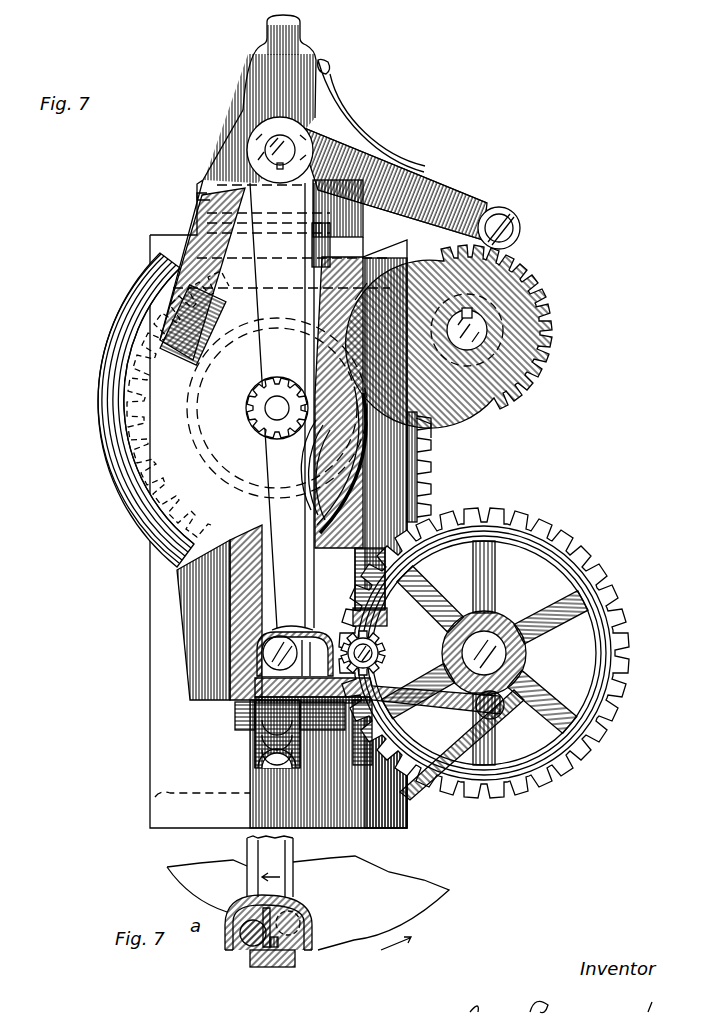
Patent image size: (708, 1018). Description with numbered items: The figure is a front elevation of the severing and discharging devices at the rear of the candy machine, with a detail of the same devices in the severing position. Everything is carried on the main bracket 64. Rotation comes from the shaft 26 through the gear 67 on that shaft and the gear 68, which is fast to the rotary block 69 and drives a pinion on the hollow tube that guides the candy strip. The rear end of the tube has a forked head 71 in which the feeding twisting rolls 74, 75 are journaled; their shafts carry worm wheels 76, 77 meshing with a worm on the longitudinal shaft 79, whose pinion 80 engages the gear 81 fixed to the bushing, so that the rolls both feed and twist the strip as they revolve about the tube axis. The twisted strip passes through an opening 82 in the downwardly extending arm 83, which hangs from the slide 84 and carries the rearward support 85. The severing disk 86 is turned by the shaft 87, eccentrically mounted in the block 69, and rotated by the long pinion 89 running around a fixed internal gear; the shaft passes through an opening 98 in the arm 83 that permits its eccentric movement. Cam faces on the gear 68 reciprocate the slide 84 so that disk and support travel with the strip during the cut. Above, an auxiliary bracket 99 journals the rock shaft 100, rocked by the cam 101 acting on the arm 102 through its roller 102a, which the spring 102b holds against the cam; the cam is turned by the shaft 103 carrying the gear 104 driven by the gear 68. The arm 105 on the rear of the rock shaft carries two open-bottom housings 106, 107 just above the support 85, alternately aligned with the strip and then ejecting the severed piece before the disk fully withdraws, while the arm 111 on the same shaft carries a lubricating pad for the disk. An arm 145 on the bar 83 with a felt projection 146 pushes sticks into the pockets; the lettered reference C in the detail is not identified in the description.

In FIG. 7, the shaft 26 is at (492, 648).
In FIG. 7, the bracket 64 is at (163, 585).
In FIG. 7, the gear 67 is at (502, 653).
In FIG. 7, the gear 68 is at (432, 468).
In FIG. 7, the block 69 is at (354, 447).
In FIG. 7, the forked head 71 is at (240, 712).
In FIG. 7, the feeding twisting roll 74 is at (385, 572).
In FIG. 7, the feeding twisting roll 75 is at (260, 760).
In FIG. 7, the worm wheel 76 is at (370, 617).
In FIG. 7, the worm wheel 77 is at (374, 745).
In FIG. 7, the shaft 79 is at (374, 627).
In FIG. 7, the pinion 80 is at (380, 654).
In FIG. 7, the gear 81 is at (257, 680).
In FIG. 7A, the opening 82 is at (280, 937).
In FIG. 7, the arm 83 is at (345, 492).
In FIG. 7, the slide 84 is at (354, 293).
In FIG. 7, the support 85 is at (257, 700).
In FIG. 7A, the support 85 is at (260, 968).
In FIG. 7, the severing disk 86 is at (117, 345).
In FIG. 7A, the severing disk 86 is at (403, 886).
In FIG. 7, the shaft 87 is at (277, 408).
In FIG. 7, the pinion 89 is at (272, 430).
In FIG. 7, the opening 98 is at (431, 430).
In FIG. 7, the auxiliary bracket 99 is at (257, 70).
In FIG. 7, the rock shaft 100 is at (272, 148).
In FIG. 7, the cam 101 is at (548, 300).
In FIG. 7, the arm 102 is at (429, 187).
In FIG. 7, the roller 102a is at (520, 230).
In FIG. 7, the spring 102b is at (372, 140).
In FIG. 7, the shaft 103 is at (470, 330).
In FIG. 7, the gear 104 is at (437, 257).
In FIG. 7, the arm 105 is at (290, 470).
In FIG. 7A, the arm 105 is at (277, 853).
In FIG. 7, the open-bottom housing 106 is at (257, 653).
In FIG. 7A, the open-bottom housing 106 is at (243, 928).
In FIG. 7, the open-bottom housing 107 is at (368, 648).
In FIG. 7A, the open-bottom housing 107 is at (293, 935).
In FIG. 7, the arm 111 is at (233, 209).
In FIG. 7, the arm 145 is at (500, 708).
In FIG. 7, the projection 146 is at (450, 725).
In FIG. 7A, the axis C is at (312, 918).